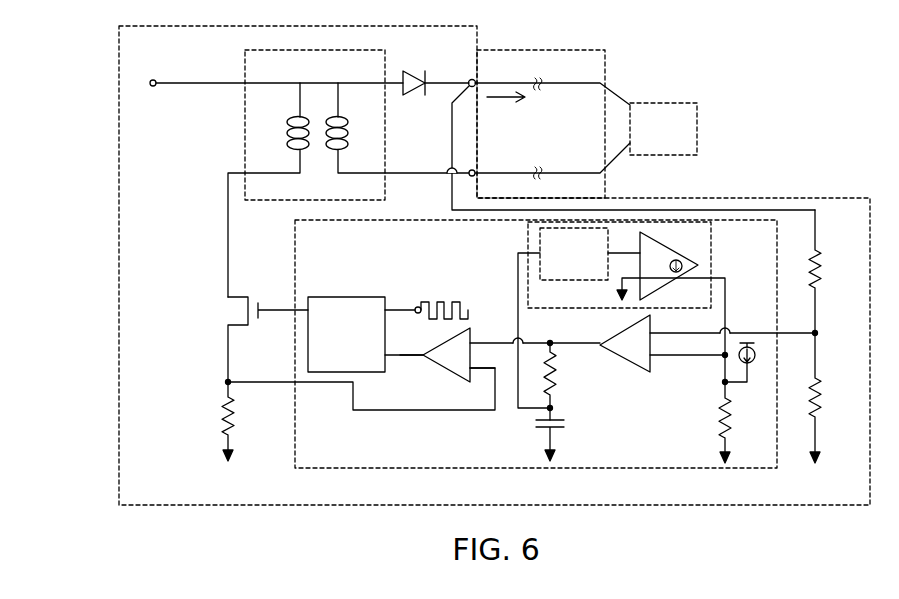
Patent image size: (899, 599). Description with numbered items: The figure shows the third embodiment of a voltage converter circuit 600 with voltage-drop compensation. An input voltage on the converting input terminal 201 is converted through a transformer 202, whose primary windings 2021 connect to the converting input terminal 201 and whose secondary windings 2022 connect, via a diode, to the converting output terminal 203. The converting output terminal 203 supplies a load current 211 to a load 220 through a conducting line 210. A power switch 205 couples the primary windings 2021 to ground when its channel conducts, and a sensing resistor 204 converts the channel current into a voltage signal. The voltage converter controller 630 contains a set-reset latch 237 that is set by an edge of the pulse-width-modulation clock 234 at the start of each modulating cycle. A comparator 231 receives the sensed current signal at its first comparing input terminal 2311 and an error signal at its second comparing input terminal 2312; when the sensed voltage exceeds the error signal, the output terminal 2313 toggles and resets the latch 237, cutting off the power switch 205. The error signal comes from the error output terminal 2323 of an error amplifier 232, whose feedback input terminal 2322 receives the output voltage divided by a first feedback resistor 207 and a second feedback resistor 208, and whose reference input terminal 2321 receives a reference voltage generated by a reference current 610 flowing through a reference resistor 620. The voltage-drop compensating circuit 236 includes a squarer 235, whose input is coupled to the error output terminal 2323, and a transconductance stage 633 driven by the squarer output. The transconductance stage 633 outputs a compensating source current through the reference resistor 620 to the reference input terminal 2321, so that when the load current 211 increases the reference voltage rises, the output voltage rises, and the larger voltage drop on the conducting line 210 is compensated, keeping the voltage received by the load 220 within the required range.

The converting input terminal 201 is at (153, 79).
The transformer 202 is at (303, 77).
The primary windings 2021 is at (296, 137).
The secondary windings 2022 is at (343, 125).
The converting output terminal 203 is at (470, 79).
The sensing resistor 204 is at (222, 418).
The power switch 205 is at (228, 300).
The first feedback resistor 207 is at (820, 265).
The second feedback resistor 208 is at (820, 395).
The conducting line 210 is at (535, 144).
The load current 211 is at (503, 101).
The load 220 is at (651, 150).
The comparator 231 is at (437, 368).
The first comparing input terminal 2311 is at (473, 371).
The second comparing input terminal 2312 is at (479, 335).
The output terminal 2313 is at (428, 352).
The error amplifier 232 is at (625, 343).
The reference input terminal 2321 is at (659, 367).
The feedback input terminal 2322 is at (655, 333).
The error output terminal 2323 is at (600, 350).
The pulse-width-modulation clock 234 is at (419, 305).
The squarer 235 is at (563, 275).
The voltage-drop compensating circuit 236 is at (562, 304).
The set-reset latch 237 is at (336, 346).
The voltage converter circuit 600 is at (131, 236).
The reference current 610 is at (749, 366).
The reference resistor 620 is at (715, 430).
The voltage converter controller 630 is at (315, 456).
The transconductance stage 633 is at (671, 307).